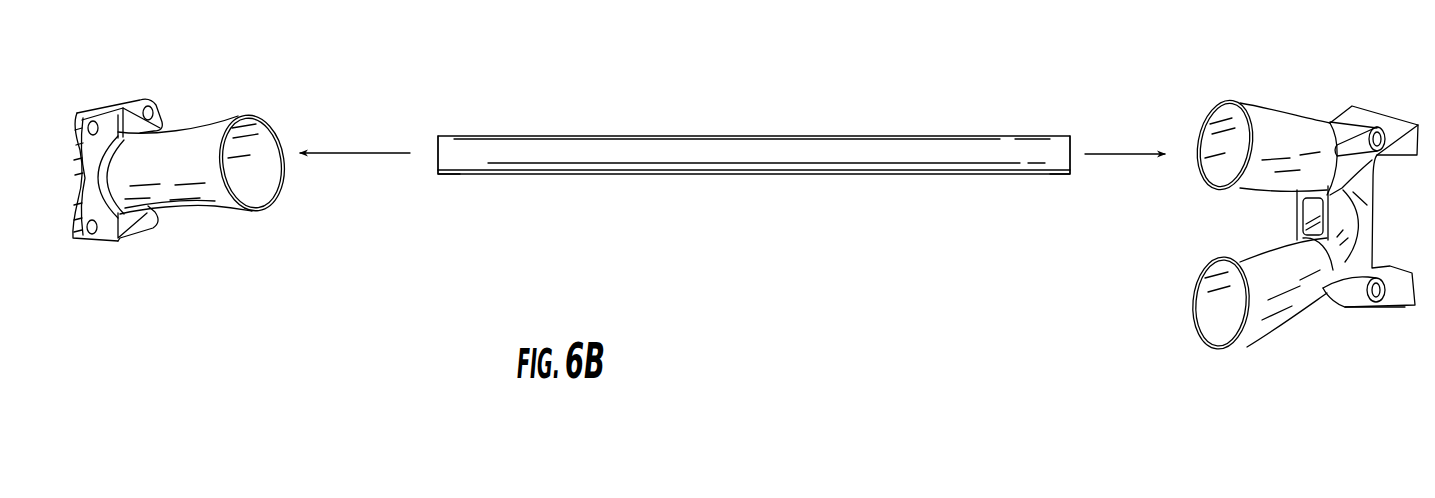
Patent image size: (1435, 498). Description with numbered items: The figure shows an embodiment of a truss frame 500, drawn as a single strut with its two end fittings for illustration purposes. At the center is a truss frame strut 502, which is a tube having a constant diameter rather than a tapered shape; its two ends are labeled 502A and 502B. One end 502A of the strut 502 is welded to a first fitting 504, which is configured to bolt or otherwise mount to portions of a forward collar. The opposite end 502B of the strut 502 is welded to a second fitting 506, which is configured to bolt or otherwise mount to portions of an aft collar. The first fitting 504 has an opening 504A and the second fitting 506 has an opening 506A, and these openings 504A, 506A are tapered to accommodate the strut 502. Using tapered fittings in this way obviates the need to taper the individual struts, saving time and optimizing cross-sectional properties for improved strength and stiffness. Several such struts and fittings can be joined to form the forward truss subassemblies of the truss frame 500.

The truss frame 500 is at (358, 79).
The truss frame strut 502 is at (787, 162).
The first end of shaft 502A is at (448, 162).
The second end of shaft 502B is at (1055, 162).
The first fitting 504 is at (1343, 307).
The opening of first fitting 504A is at (1210, 178).
The second fitting 506 is at (168, 200).
The opening of second fitting 506A is at (250, 186).